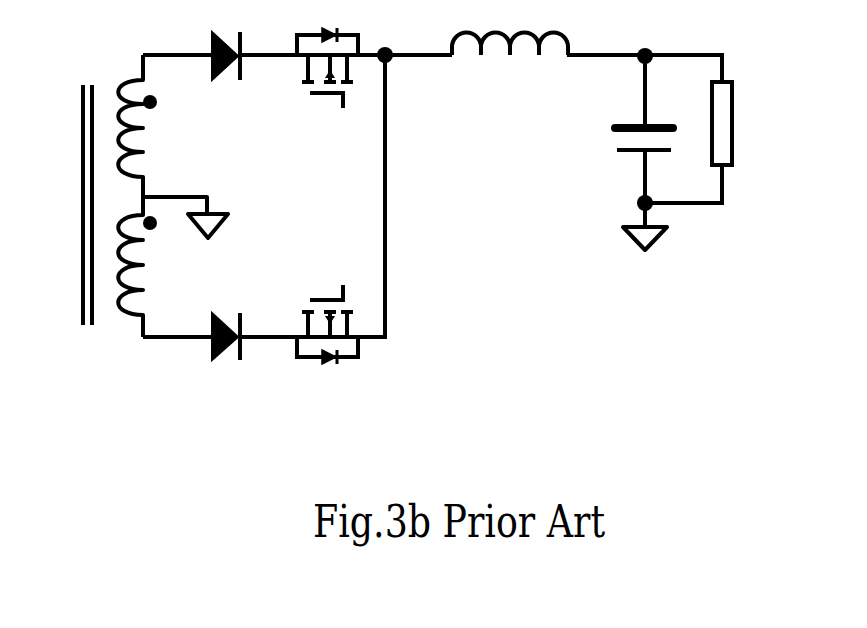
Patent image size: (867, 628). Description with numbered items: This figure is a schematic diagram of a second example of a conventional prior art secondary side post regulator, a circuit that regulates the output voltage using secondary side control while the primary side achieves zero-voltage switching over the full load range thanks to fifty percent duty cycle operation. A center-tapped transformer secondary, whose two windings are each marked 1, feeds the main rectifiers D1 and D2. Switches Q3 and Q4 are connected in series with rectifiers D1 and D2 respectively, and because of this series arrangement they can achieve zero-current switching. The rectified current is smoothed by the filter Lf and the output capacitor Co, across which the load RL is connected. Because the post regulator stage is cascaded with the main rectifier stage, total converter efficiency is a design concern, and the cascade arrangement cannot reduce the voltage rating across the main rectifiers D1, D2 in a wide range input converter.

The transformer secondary winding 1 is at (173, 196).
The rectifier D1 is at (234, 90).
The rectifier D2 is at (229, 362).
The switch Q3 is at (327, 88).
The switch Q4 is at (327, 346).
The filter Lf is at (510, 73).
The output capacitor Co is at (627, 167).
The load resistor RL is at (751, 150).